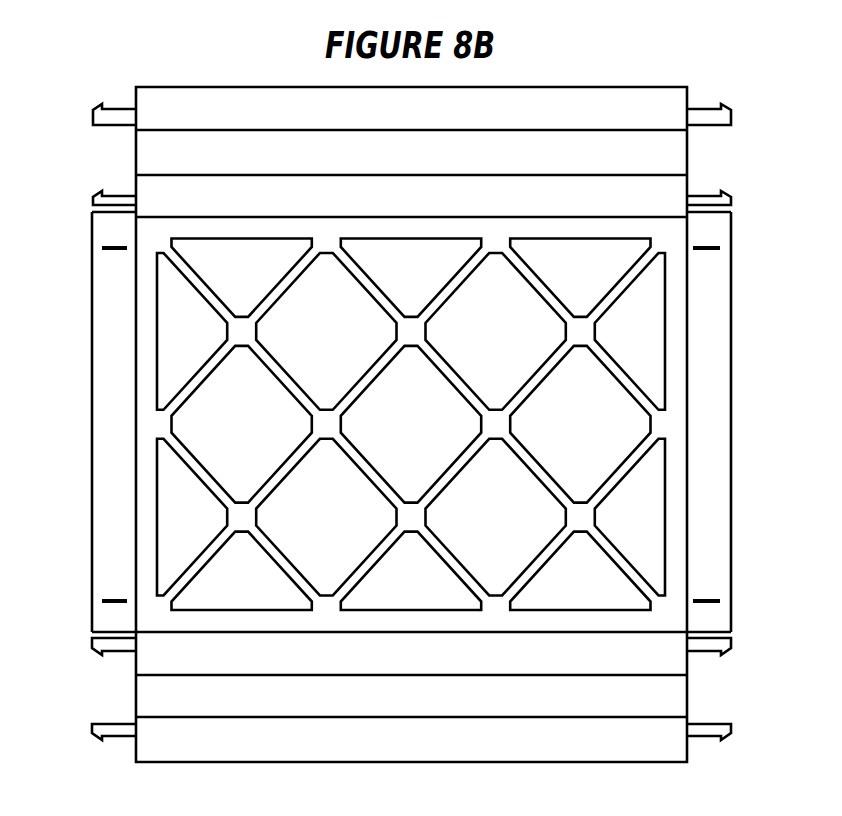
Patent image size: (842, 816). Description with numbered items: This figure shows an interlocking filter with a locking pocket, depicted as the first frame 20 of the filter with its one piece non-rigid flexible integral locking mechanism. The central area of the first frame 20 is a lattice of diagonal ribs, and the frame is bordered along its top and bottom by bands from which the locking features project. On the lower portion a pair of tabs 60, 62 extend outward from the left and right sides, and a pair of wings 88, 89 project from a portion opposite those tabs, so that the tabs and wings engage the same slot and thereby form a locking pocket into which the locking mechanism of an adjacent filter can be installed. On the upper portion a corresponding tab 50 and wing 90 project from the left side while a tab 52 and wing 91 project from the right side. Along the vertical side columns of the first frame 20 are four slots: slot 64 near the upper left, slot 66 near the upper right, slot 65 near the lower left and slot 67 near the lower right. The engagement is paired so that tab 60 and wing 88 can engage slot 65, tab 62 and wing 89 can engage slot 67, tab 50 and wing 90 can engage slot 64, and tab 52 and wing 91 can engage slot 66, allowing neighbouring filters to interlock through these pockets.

The first frame 20 is at (783, 196).
The tab 50 is at (93, 206).
The tab 52 is at (736, 206).
The tab 60 is at (93, 641).
The tab 62 is at (736, 641).
The slot 64 is at (110, 247).
The slot 65 is at (112, 603).
The slot 66 is at (707, 247).
The slot 67 is at (707, 603).
The wing 88 is at (93, 727).
The wing 89 is at (736, 727).
The wing 90 is at (93, 119).
The wing 91 is at (736, 119).